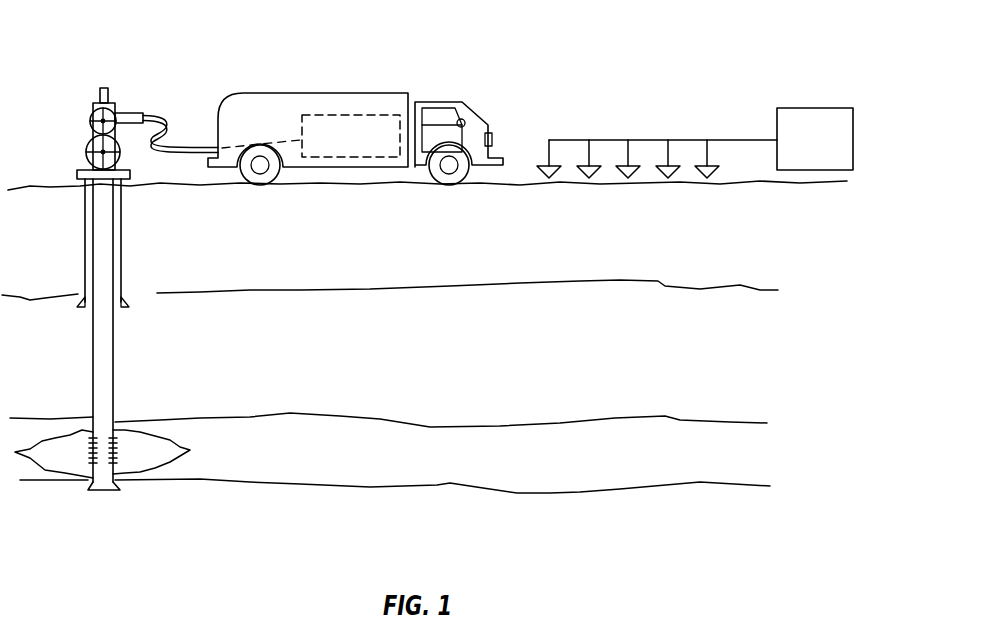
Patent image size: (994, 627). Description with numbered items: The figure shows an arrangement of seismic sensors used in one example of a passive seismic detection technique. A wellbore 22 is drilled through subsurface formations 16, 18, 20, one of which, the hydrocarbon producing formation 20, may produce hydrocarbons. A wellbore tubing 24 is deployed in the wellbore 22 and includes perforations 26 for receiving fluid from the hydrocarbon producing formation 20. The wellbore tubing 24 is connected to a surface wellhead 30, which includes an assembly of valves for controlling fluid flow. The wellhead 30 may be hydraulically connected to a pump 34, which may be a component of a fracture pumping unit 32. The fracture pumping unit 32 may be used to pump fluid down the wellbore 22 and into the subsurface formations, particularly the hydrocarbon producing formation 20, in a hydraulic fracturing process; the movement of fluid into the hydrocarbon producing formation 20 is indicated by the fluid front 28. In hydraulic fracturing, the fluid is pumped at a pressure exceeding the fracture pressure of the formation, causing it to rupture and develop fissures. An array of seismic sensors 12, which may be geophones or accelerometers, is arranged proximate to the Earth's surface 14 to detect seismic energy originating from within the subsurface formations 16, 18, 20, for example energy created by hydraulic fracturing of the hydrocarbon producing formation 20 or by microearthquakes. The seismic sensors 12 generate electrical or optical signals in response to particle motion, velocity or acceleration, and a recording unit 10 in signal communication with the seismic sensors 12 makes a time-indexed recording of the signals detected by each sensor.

The recording unit 10 is at (815, 108).
The seismic sensors 12 is at (538, 173).
The Earth's surface 14 is at (477, 183).
The subsurface formation 16 is at (328, 244).
The subsurface formation 18 is at (328, 349).
The hydrocarbon producing formation 20 is at (328, 469).
The wellbore 22 is at (122, 238).
The wellbore tubing 24 is at (114, 350).
The perforations 26 is at (116, 450).
The fluid front 28 is at (192, 450).
The surface wellhead 30 is at (127, 112).
The fracture pumping unit 32 is at (280, 92).
The pump 34 is at (323, 117).